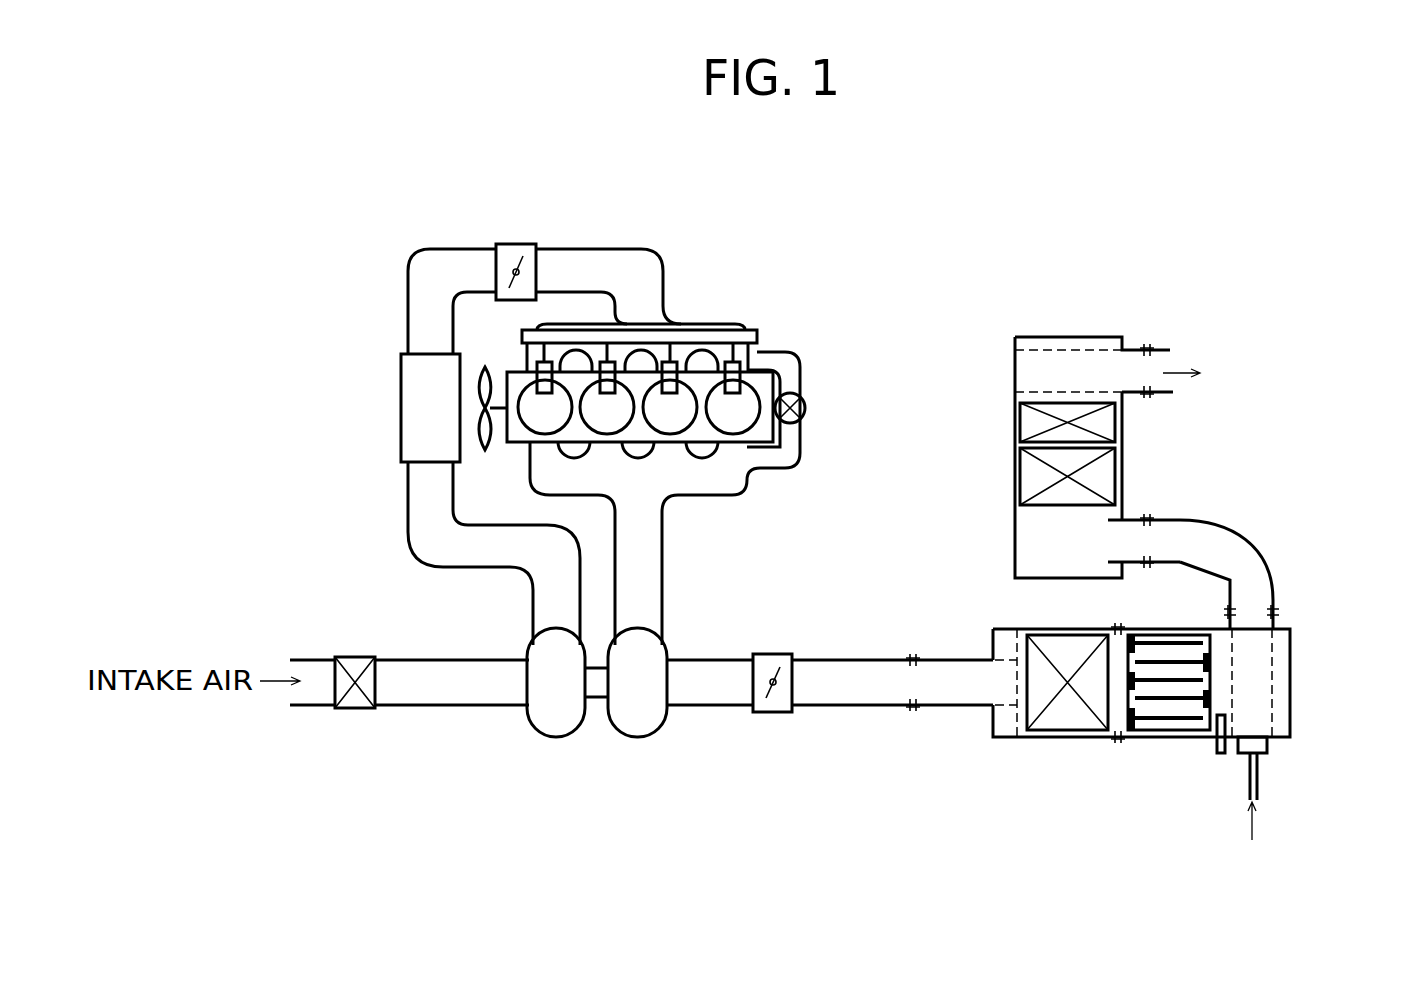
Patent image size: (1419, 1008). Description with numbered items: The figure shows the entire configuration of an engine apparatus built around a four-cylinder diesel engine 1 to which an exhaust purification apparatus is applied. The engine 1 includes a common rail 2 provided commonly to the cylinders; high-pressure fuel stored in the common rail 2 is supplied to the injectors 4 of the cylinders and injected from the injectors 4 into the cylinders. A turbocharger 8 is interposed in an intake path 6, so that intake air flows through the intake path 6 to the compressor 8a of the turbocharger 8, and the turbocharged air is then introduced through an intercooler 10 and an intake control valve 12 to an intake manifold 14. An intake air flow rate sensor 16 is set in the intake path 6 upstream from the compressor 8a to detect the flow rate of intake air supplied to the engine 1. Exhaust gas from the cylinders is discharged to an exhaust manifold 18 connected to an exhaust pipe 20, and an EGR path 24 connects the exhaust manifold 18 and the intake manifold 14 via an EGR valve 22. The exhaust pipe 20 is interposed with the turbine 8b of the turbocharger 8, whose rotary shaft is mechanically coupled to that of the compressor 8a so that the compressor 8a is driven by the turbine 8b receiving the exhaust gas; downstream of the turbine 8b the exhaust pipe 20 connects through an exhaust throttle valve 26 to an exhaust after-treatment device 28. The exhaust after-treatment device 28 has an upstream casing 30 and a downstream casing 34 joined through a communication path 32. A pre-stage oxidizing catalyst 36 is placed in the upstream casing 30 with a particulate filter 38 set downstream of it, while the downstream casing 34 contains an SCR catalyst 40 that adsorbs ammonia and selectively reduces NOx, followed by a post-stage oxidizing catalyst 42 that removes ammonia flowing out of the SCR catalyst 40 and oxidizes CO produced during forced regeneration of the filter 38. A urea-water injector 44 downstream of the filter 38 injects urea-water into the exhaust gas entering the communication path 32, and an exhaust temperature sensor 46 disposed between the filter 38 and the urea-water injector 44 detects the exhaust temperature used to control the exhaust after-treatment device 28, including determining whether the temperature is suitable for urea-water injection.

The engine 1 is at (778, 237).
The common rail 2 is at (713, 337).
The injectors 4 is at (607, 394).
The intake path 6 is at (440, 692).
The turbocharger 8 is at (596, 725).
The compressor 8a is at (548, 722).
The turbine 8b is at (643, 722).
The intercooler 10 is at (401, 378).
The intake control valve 12 is at (509, 244).
The intake manifold 14 is at (527, 353).
The intake air flow rate sensor 16 is at (355, 700).
The exhaust manifold 18 is at (683, 486).
The exhaust pipe 20 is at (705, 693).
The EGR valve 22 is at (807, 405).
The EGR path 24 is at (773, 457).
The exhaust throttle valve 26 is at (767, 712).
The exhaust after-treatment device 28 is at (1310, 455).
The upstream casing 30 is at (1098, 740).
The communication path 32 is at (1218, 538).
The downstream casing 34 is at (1072, 337).
The pre-stage oxidizing catalyst 36 is at (1055, 723).
The particulate filter 38 is at (1168, 725).
The SCR catalyst 40 is at (1105, 480).
The post-stage oxidizing catalyst 42 is at (1108, 424).
The urea-water injector 44 is at (1253, 744).
The exhaust temperature sensor 46 is at (1221, 753).